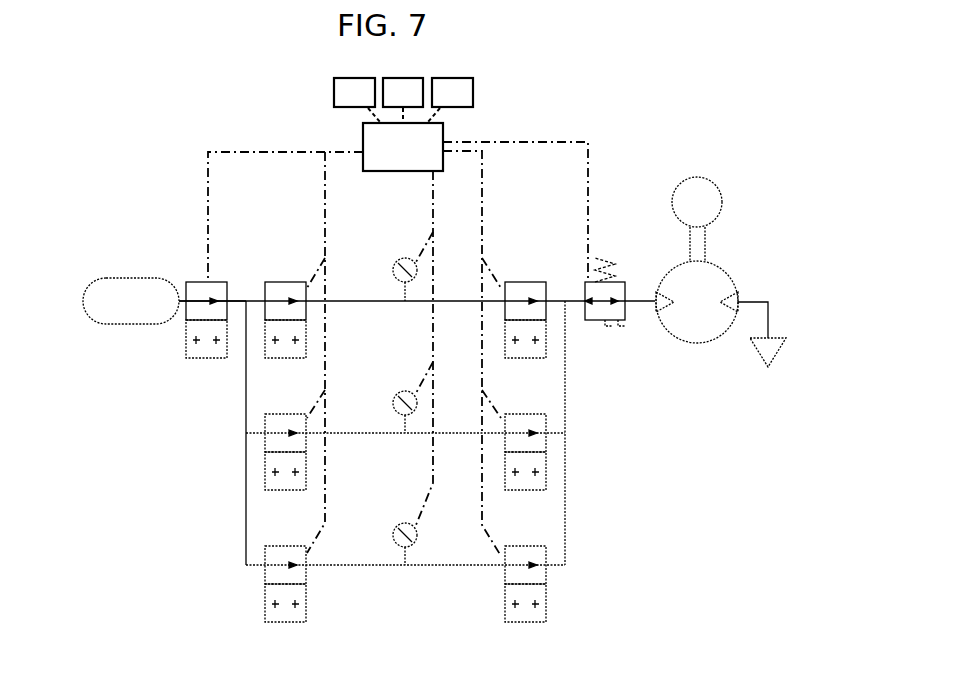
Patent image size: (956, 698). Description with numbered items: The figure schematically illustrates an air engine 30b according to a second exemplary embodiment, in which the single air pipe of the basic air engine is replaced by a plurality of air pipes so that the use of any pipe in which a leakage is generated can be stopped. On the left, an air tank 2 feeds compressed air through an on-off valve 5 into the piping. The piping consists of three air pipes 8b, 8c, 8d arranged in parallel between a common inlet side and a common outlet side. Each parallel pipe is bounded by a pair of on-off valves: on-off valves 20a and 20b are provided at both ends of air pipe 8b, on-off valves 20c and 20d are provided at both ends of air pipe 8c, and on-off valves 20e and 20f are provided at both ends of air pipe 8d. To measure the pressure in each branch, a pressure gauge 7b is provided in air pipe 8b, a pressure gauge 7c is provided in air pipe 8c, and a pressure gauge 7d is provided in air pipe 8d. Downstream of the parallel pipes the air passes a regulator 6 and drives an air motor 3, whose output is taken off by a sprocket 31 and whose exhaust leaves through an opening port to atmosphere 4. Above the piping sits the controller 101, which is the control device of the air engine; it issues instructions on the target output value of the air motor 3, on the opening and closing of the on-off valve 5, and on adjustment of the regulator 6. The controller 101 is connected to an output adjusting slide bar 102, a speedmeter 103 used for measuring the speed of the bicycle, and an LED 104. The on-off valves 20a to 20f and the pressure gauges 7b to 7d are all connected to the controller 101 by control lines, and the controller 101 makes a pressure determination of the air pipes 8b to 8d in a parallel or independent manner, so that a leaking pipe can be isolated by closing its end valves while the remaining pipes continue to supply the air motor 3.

The air tank 2 is at (140, 300).
The air motor 3 is at (704, 318).
The opening port to atmosphere 4 is at (767, 364).
The on-off valve 5 is at (198, 362).
The regulator 6 is at (598, 327).
The pressure gauge 7b is at (394, 262).
The pressure gauge 7c is at (394, 393).
The pressure gauge 7d is at (394, 525).
The air pipe 8b is at (375, 299).
The air pipe 8c is at (375, 431).
The air pipe 8d is at (375, 562).
The on-off valve 20a is at (278, 272).
The on-off valve 20b is at (521, 280).
The on-off valve 20c is at (258, 449).
The on-off valve 20d is at (548, 446).
The on-off valve 20e is at (258, 612).
The on-off valve 20f is at (548, 574).
The air engine 30b is at (172, 238).
The sprocket 31 is at (706, 197).
The controller 101 is at (403, 147).
The output adjusting slide bar 102 is at (357, 100).
The speedmeter 103 is at (450, 100).
The LED 104 is at (403, 100).